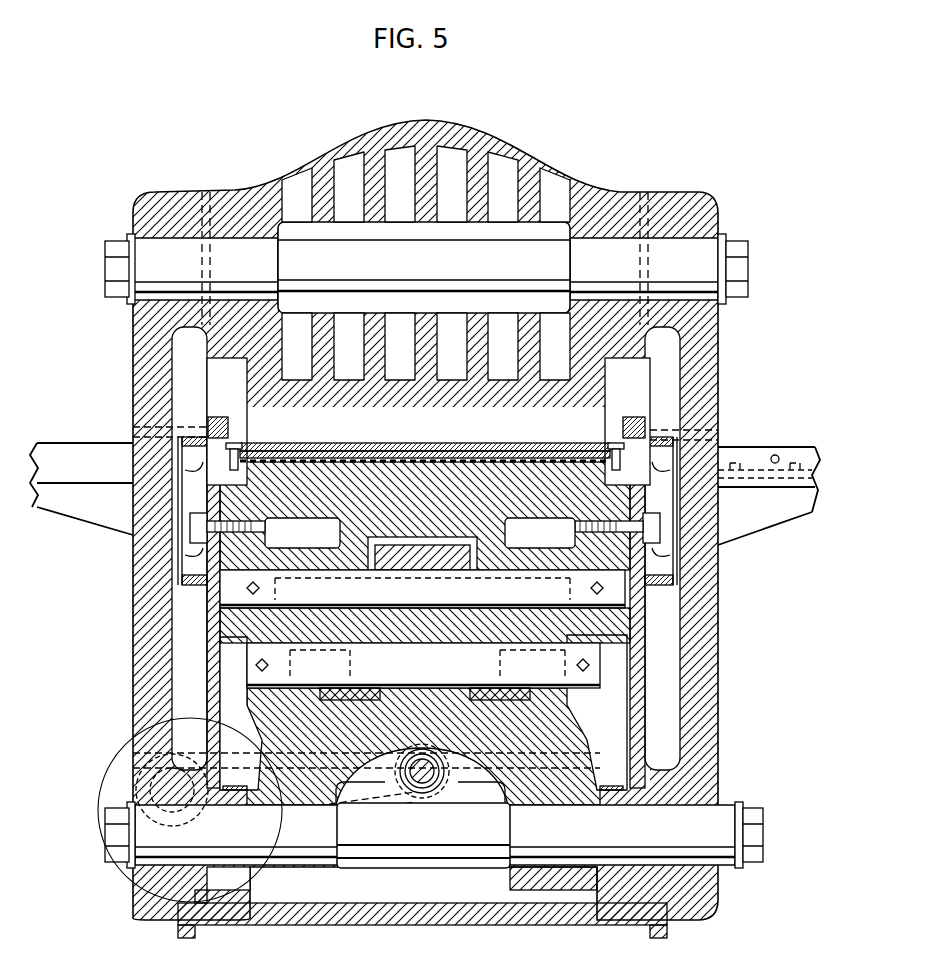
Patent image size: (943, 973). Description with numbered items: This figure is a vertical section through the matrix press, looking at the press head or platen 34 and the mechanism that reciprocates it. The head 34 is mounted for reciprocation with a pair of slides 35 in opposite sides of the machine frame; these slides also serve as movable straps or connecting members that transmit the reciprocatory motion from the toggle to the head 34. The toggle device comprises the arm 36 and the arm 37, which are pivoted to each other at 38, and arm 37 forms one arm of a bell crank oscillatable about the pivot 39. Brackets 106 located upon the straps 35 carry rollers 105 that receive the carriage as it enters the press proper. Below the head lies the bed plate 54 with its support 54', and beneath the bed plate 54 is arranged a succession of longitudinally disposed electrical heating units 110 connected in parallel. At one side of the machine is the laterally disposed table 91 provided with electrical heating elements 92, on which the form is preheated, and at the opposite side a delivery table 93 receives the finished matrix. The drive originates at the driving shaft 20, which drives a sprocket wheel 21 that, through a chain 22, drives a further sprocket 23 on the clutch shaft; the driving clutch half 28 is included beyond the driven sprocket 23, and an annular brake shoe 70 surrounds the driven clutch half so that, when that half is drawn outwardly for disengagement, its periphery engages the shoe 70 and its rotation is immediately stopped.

The slides 35 is at (702, 215).
The press head 34 is at (593, 396).
The brackets 106 is at (218, 417).
The rollers 105 is at (228, 448).
The electrical heating units 110 is at (335, 457).
The bed plate 54 is at (425, 437).
The support 54' is at (540, 539).
The delivery table 93 is at (57, 450).
The table 91 is at (752, 450).
The electrical heating elements 92 is at (793, 460).
The pivot 39 is at (422, 589).
The arm 37 is at (345, 632).
The pivot 38 is at (423, 671).
The arm 36 is at (573, 750).
The annular brake shoe 70 is at (108, 753).
The sprocket 23 is at (132, 783).
The clutch half 28 is at (107, 800).
The chain 22 is at (367, 802).
The driving shaft 20 is at (425, 785).
The sprocket wheel 21 is at (453, 787).